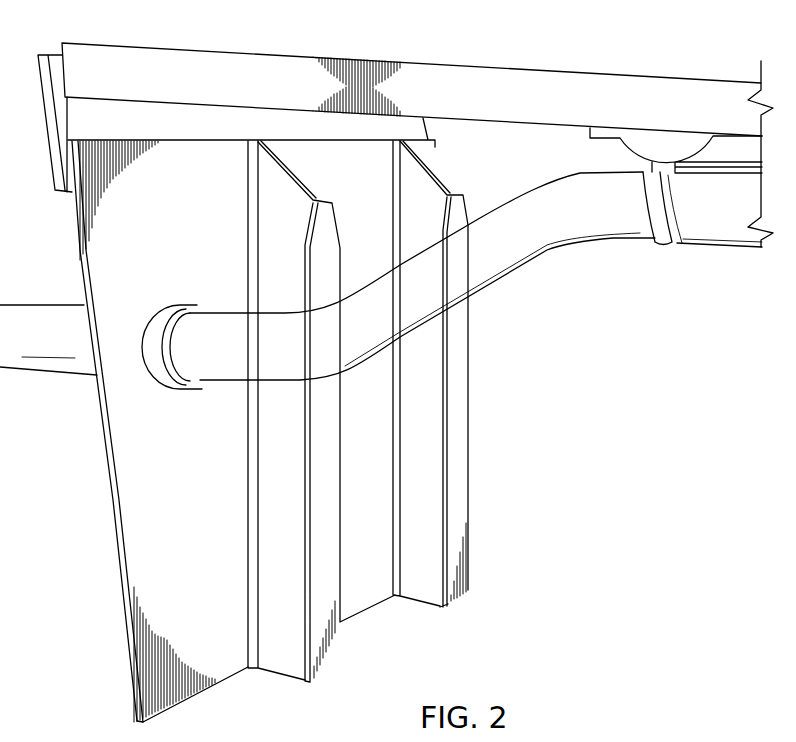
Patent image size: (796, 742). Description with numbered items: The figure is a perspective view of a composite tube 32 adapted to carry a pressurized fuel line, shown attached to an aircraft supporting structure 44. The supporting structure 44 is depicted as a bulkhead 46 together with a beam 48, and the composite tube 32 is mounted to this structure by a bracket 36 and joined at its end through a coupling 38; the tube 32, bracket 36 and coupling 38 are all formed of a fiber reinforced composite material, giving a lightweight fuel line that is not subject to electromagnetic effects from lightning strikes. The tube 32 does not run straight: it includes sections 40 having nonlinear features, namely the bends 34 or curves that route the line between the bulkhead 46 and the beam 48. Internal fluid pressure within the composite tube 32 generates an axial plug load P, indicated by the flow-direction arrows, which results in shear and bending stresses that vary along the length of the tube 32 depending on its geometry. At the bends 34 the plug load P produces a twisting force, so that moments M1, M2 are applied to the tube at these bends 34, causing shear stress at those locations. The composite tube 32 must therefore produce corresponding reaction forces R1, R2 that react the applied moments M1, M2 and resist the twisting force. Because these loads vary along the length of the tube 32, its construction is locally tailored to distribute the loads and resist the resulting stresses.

The composite tube 32 is at (52, 312).
The bends 34 is at (548, 178).
The brackets 36 is at (649, 243).
The couplings 38 is at (172, 305).
The sections 40 is at (235, 405).
The supporting structure 44 is at (97, 666).
The bulkhead 46 is at (133, 530).
The beam 48 is at (447, 72).
The axial plug load P is at (230, 352).
The moment M1 is at (153, 445).
The moment M2 is at (680, 308).
The reaction force R1 is at (175, 417).
The reaction force R2 is at (678, 279).